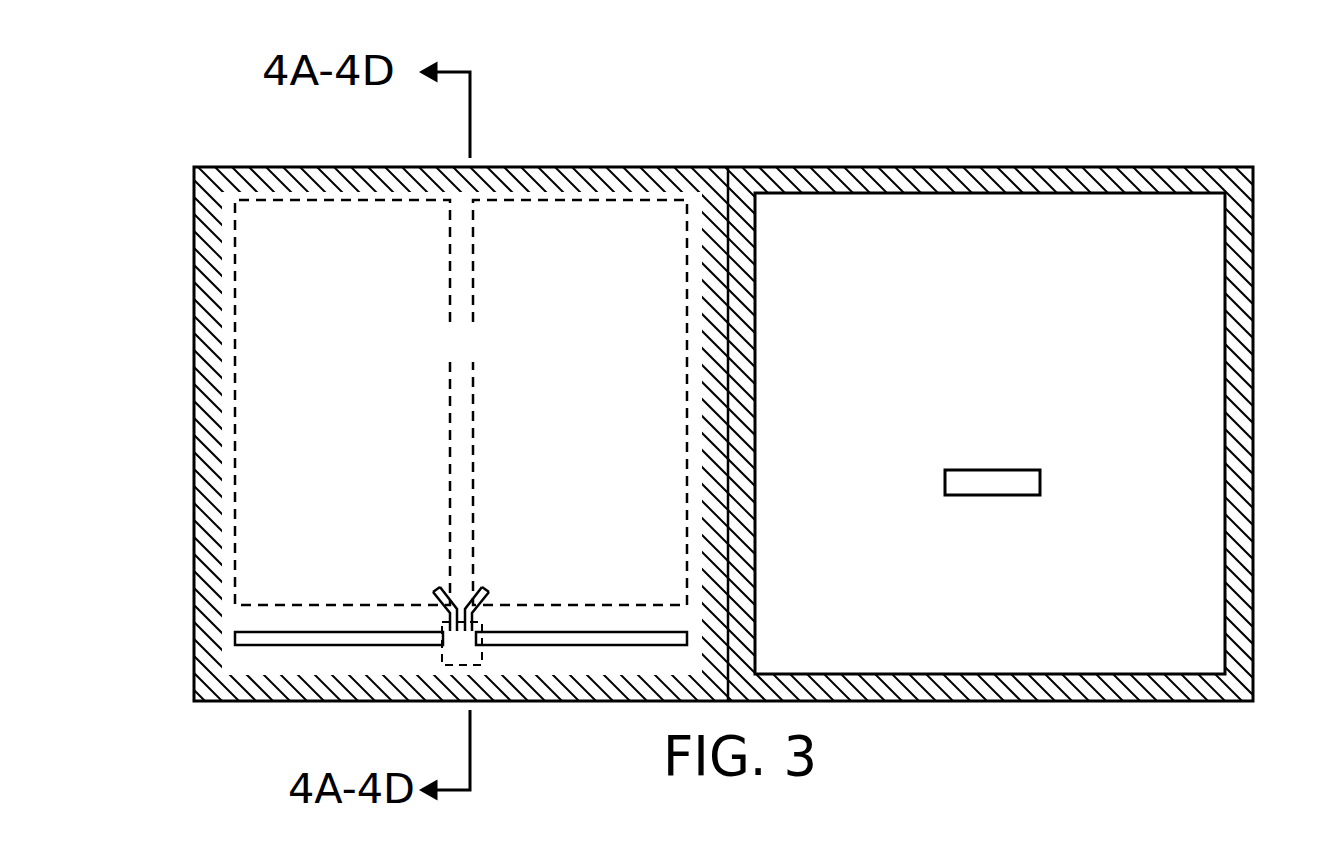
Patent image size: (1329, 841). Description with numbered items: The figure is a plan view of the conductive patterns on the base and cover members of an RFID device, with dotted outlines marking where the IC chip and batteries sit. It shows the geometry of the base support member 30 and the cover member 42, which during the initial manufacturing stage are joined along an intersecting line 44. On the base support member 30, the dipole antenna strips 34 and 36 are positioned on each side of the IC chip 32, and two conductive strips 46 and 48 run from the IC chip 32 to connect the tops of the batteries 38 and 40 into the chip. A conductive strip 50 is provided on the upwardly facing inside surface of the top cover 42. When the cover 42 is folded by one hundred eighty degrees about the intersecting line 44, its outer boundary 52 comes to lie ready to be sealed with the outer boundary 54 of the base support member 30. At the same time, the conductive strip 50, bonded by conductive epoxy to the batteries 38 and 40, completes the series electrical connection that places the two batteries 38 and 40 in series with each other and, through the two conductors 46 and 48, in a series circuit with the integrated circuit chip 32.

The base support member 30 is at (480, 357).
The IC chip 32 is at (473, 656).
The dipole antenna strip 34 is at (578, 640).
The dipole antenna strip 36 is at (306, 640).
The battery 38 is at (240, 458).
The battery 40 is at (622, 218).
The cover member 42 is at (932, 357).
The intersecting line 44 is at (727, 168).
The conductive strip 46 is at (437, 588).
The conductive strip 48 is at (484, 588).
The conductive strip 50 is at (1013, 470).
The outer boundary 52 is at (1243, 358).
The outer boundary 54 is at (307, 180).